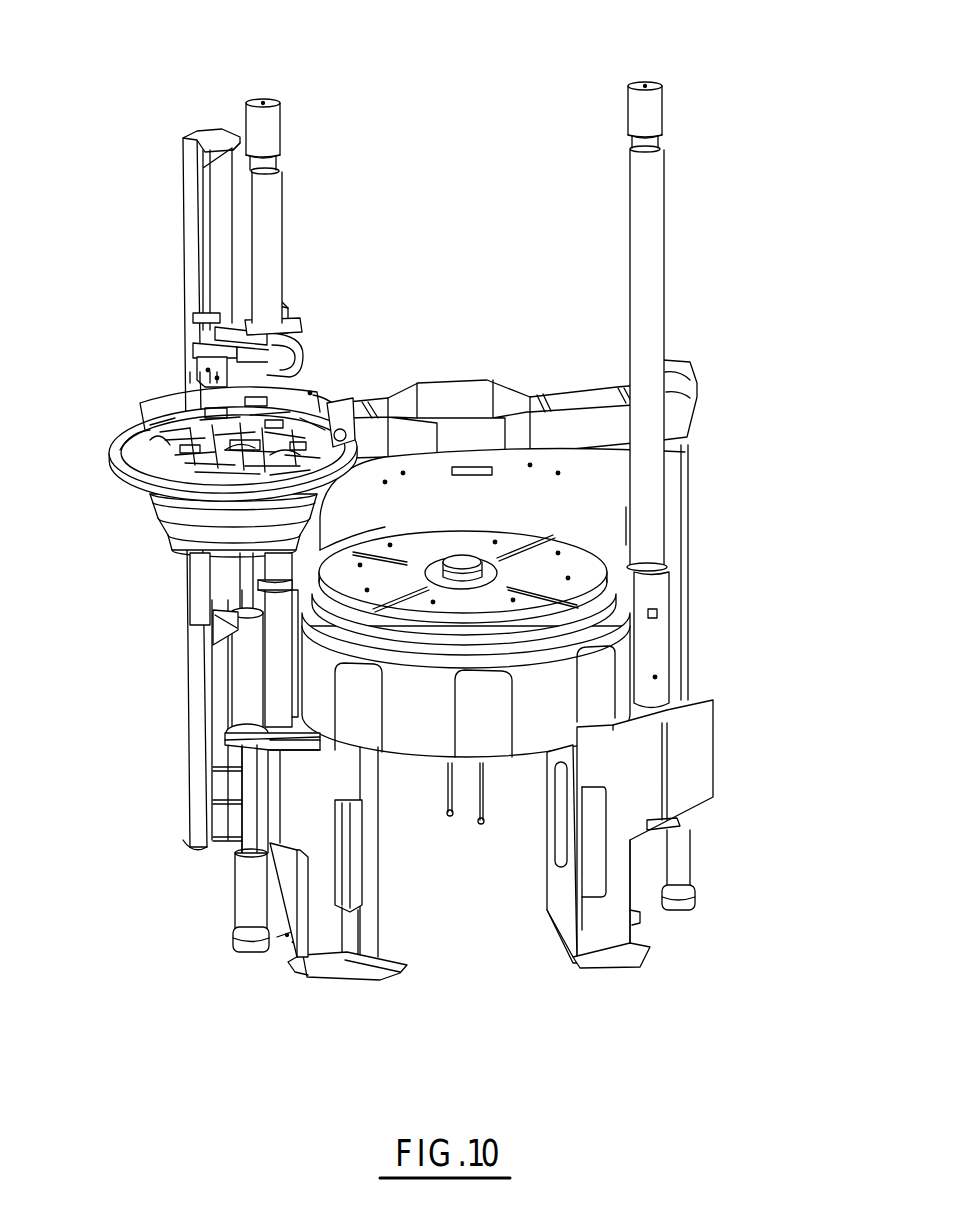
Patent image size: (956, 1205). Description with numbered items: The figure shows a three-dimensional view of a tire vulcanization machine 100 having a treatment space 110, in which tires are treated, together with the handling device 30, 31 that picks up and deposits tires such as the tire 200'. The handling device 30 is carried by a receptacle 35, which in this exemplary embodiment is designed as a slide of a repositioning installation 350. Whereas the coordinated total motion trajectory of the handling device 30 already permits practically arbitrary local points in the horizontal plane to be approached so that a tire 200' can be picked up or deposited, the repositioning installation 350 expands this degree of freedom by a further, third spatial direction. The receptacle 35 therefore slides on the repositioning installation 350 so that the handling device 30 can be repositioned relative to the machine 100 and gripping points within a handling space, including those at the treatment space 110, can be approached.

The tire vulcanization machine 100 is at (446, 493).
The treatment space 110 is at (612, 540).
The handling device 30 is at (177, 491).
The support column 31 is at (177, 491).
The receptacle 35 is at (258, 323).
The tire 200' is at (203, 502).
The repositioning installation 350 is at (205, 605).